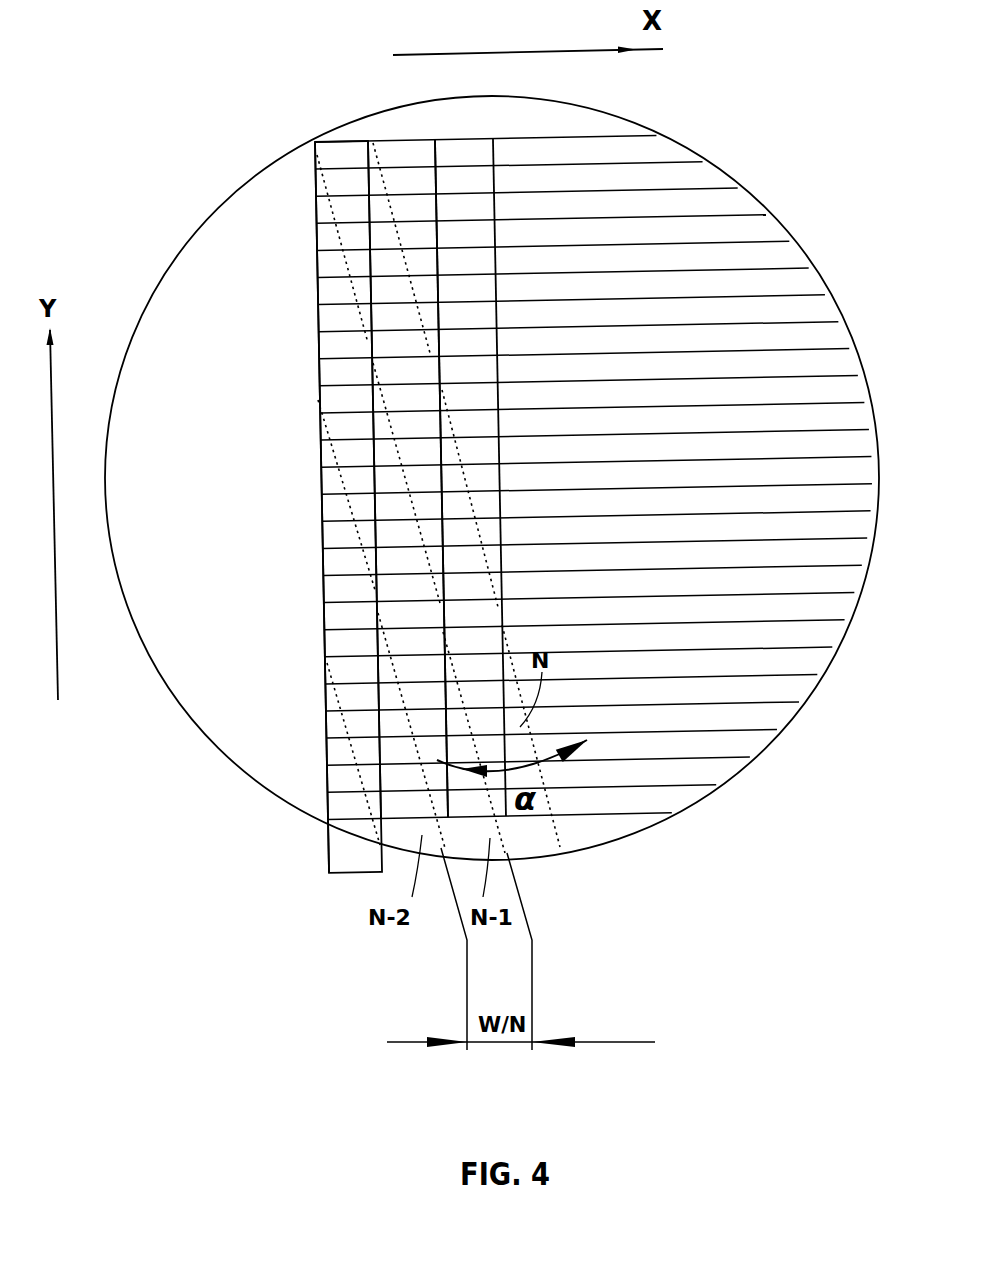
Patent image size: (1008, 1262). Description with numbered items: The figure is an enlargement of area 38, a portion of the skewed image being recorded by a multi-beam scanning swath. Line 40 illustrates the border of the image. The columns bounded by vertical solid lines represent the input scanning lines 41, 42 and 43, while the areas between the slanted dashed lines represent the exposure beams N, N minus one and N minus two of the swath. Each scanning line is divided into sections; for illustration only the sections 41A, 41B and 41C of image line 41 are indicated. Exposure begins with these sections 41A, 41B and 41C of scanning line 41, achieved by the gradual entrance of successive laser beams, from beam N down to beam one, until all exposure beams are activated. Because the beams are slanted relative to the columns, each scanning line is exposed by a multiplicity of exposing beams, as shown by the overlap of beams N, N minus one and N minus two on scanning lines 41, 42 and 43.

The area 38 is at (733, 172).
The line 40 is at (322, 720).
The input scanning line 41 is at (362, 155).
The section 41A is at (330, 292).
The section 41B is at (330, 542).
The section 41C is at (347, 852).
The input scanning line 42 is at (400, 150).
The input scanning line 43 is at (480, 185).